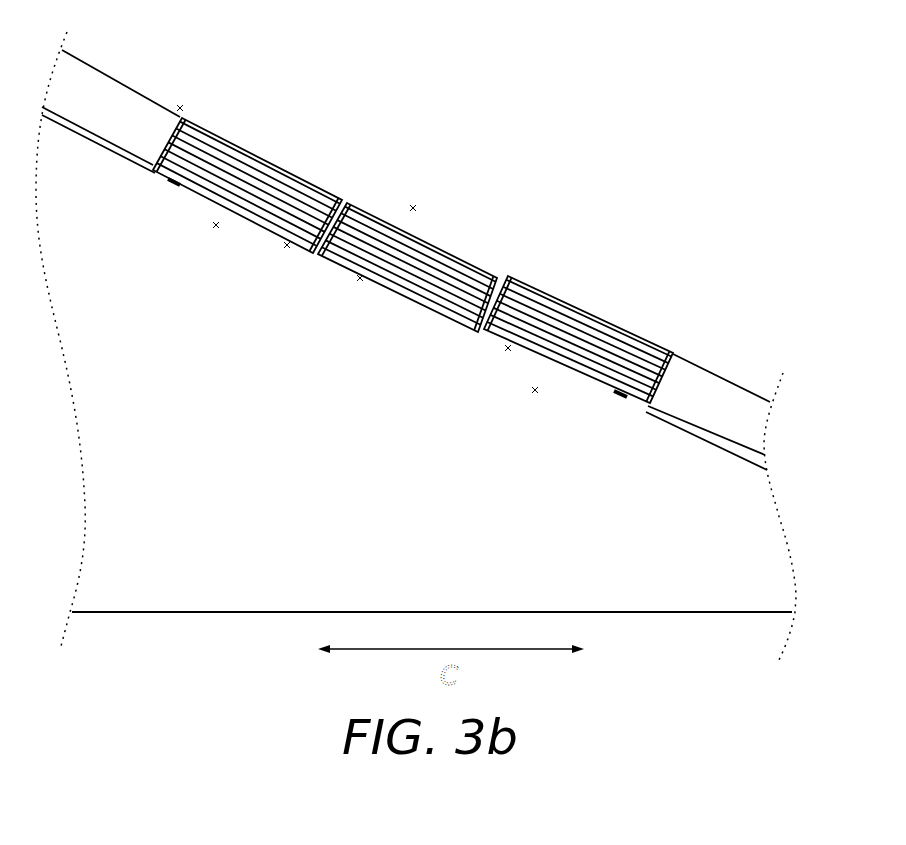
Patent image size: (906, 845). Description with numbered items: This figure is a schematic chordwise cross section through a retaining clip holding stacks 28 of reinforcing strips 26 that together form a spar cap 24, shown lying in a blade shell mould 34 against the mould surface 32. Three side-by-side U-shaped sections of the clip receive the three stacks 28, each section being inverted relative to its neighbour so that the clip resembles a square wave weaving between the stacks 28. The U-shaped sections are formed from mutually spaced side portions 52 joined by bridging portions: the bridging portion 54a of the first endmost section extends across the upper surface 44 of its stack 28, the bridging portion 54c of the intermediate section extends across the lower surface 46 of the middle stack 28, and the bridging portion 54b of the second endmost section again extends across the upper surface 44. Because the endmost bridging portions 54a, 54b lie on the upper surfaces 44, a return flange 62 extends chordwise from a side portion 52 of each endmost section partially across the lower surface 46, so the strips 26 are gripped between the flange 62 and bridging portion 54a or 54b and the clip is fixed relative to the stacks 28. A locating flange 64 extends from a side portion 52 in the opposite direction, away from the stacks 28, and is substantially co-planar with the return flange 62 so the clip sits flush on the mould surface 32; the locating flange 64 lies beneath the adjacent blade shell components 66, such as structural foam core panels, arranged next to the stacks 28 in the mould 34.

The spar cap 24 is at (476, 111).
The strips 26 is at (212, 188).
The stacks 28 is at (216, 230).
The mould surface 32 is at (78, 140).
The mould 34 is at (453, 551).
The upper surface 44 is at (218, 132).
The lower surface 46 is at (180, 107).
The side portions 52 is at (352, 200).
The bridging portion of the first U-shaped section 54a is at (263, 152).
The bridging portion of the second U-shaped section 54b is at (592, 313).
The bridging portion of the intermediate U-shaped section 54c is at (430, 343).
The return flange 62 is at (160, 192).
The locating flange 64 is at (658, 420).
The blade shell components 66 is at (76, 48).